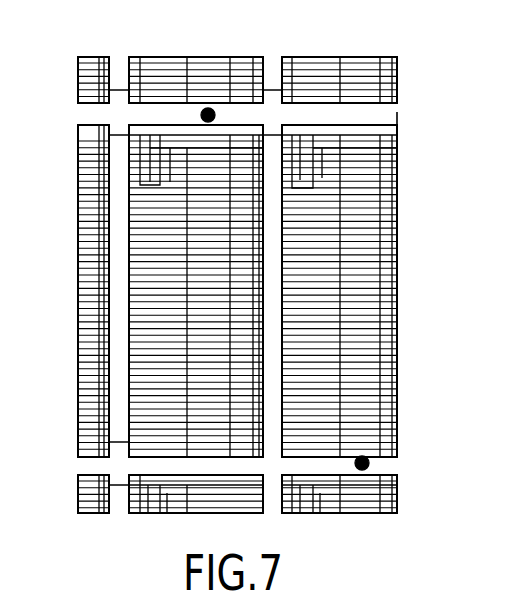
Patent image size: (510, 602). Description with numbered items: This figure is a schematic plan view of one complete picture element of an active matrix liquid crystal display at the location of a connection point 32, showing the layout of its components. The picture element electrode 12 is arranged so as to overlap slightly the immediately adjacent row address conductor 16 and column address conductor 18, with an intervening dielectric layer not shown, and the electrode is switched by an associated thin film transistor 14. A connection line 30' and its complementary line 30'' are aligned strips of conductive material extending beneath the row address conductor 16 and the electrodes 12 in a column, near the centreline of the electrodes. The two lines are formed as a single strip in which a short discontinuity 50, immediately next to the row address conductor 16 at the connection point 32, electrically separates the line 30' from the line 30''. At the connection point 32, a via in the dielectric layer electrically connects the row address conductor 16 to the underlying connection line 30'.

The picture element electrode 12 is at (273, 63).
The thin film transistor 14 is at (142, 163).
The row address conductor 16 is at (397, 118).
The column address conductor 18 is at (121, 65).
The connection line 30' is at (305, 232).
The complementary line 30'' is at (249, 342).
The connection point 32 is at (210, 108).
The discontinuity 50 is at (200, 148).